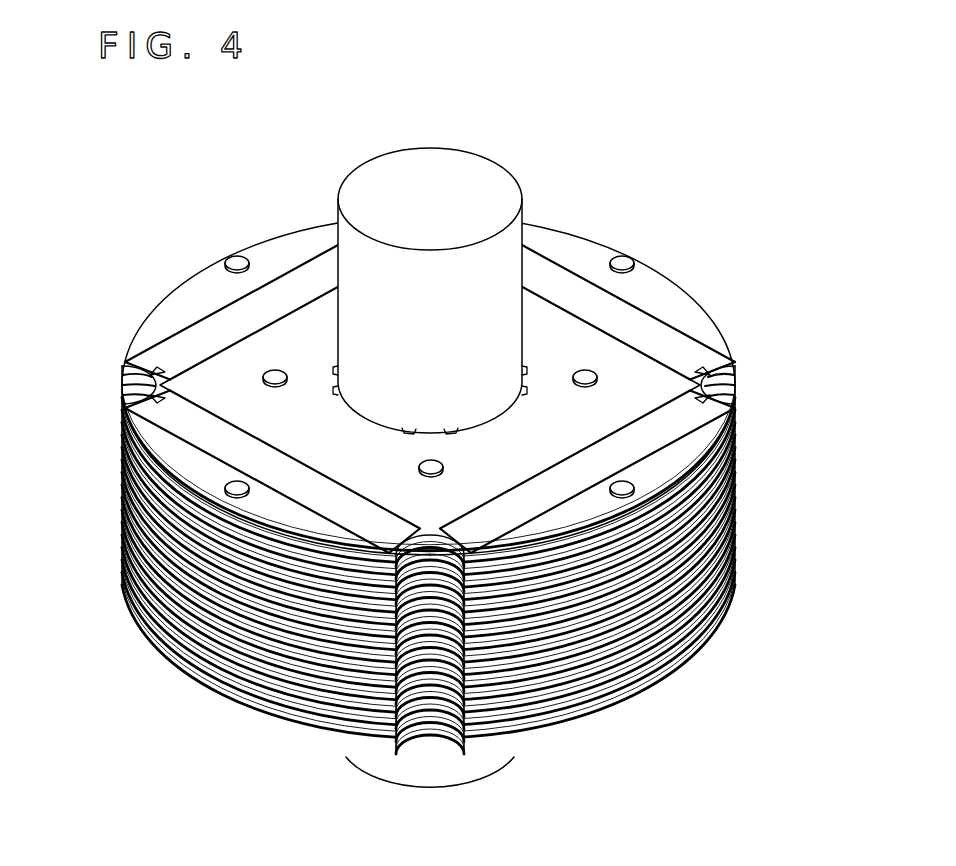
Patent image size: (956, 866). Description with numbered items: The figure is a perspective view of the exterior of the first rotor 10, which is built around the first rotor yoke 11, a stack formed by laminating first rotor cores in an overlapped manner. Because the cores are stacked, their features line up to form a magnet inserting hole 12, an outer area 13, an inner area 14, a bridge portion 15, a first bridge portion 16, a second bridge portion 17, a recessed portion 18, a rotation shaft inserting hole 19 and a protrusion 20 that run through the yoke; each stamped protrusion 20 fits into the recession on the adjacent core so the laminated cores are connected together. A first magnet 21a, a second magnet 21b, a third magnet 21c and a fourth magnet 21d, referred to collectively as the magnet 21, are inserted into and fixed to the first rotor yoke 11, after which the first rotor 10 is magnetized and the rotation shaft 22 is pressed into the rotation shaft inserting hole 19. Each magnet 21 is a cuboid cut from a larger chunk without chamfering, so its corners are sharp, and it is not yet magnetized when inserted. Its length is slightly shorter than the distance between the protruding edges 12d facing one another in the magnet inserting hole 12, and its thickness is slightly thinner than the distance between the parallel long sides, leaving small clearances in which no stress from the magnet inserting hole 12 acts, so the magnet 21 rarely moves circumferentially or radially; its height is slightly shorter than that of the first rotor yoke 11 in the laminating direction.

The first rotor 10 is at (215, 190).
The first rotor yoke 11 is at (168, 277).
The magnet inserting hole 12 is at (275, 285).
The protruding edge 12d is at (168, 393).
The outer area 13 is at (168, 303).
The inner area 14 is at (733, 520).
The bridge portion 15 is at (78, 268).
The first bridge portion 16 is at (150, 363).
The second bridge portion 17 is at (172, 370).
The recessed portion 18 is at (105, 390).
The rotation shaft inserting hole 19 is at (397, 400).
The protrusion 20 is at (237, 256).
The magnet 21 is at (439, 374).
The first magnet 21a is at (187, 430).
The second magnet 21b is at (228, 307).
The third magnet 21c is at (643, 320).
The fourth magnet 21d is at (667, 432).
The rotation shaft 22 is at (455, 165).